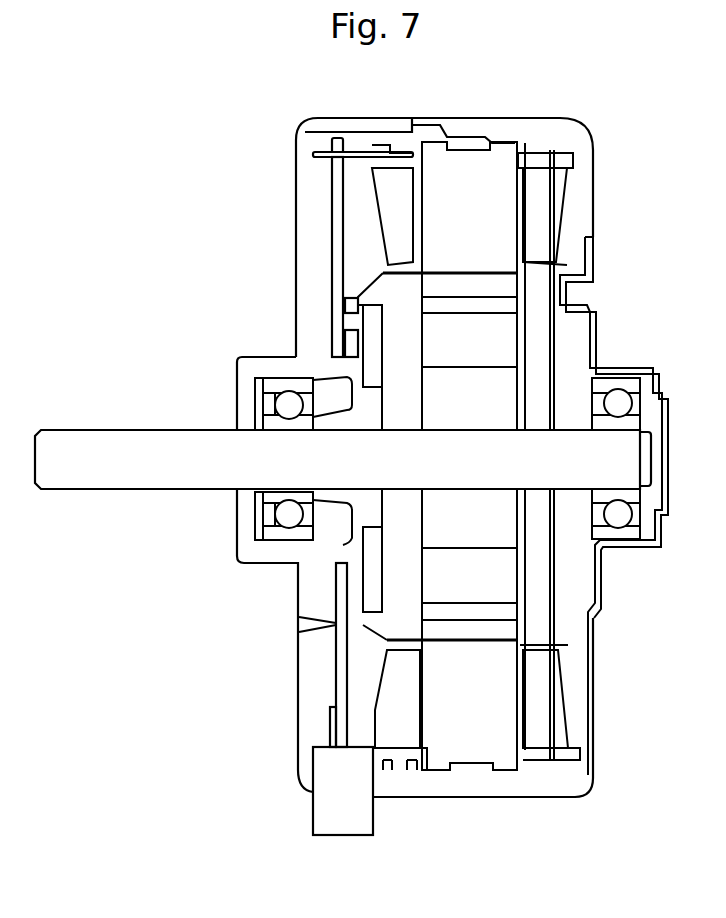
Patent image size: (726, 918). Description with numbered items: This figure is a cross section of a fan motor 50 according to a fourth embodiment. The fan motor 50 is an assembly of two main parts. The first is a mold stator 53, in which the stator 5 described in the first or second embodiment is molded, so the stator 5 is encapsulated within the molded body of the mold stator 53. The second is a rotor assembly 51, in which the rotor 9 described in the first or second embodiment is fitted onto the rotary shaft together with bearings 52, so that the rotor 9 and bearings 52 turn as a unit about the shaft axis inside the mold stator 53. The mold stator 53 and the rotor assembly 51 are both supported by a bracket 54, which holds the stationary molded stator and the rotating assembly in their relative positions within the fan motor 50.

The fan motor 50 is at (190, 233).
The rotor assembly 51 is at (121, 429).
The bearings 52 is at (288, 516).
The mold stator 53 is at (455, 126).
The bracket 54 is at (597, 326).
The stator 5 is at (470, 224).
The rotor 9 is at (485, 573).